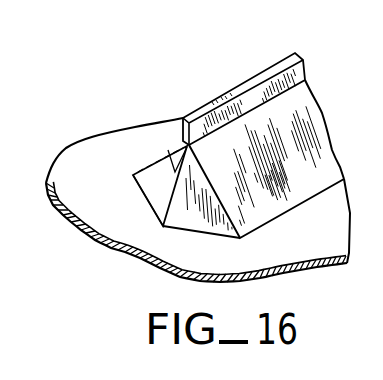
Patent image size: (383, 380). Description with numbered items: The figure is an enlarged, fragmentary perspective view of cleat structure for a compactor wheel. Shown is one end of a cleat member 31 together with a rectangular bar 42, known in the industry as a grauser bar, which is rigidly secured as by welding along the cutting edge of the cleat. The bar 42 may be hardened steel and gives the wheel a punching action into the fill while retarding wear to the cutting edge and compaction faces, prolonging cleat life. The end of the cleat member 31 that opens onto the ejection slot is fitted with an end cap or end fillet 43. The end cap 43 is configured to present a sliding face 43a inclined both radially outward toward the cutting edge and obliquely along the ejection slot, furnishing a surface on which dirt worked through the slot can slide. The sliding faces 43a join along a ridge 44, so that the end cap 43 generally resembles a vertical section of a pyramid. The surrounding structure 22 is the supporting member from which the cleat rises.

The base plate 22 is at (122, 237).
The cleat member 31 is at (315, 112).
The rectangular bar 42 is at (270, 70).
The end cap 43 is at (146, 155).
The sliding face 43a is at (147, 184).
The ridge 44 is at (168, 150).